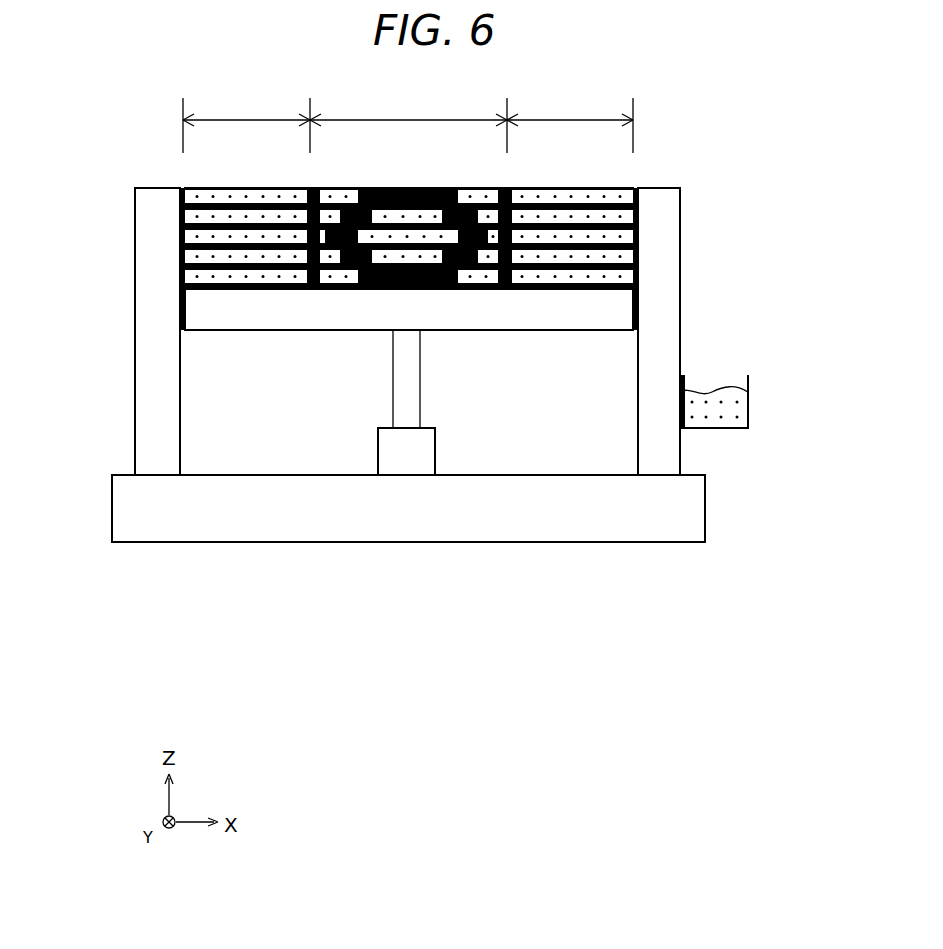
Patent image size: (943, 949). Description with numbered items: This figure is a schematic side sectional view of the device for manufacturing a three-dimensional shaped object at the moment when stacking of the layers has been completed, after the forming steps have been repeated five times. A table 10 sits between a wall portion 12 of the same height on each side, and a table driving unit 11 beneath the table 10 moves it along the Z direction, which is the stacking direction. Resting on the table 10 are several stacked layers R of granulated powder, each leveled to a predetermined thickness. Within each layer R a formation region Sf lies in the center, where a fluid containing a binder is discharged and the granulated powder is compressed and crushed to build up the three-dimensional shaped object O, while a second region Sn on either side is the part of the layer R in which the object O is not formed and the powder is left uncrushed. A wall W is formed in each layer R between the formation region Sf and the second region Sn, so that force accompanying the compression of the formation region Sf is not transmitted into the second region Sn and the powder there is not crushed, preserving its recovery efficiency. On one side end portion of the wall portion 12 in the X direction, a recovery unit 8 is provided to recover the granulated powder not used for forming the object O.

The recovery unit 8 is at (748, 393).
The table 10 is at (276, 322).
The table driving unit 11 is at (378, 446).
The wall portion 12 is at (136, 290).
The layer R is at (630, 186).
The wall W is at (311, 285).
The three-dimensional shaped object O is at (445, 289).
The second region Sn is at (408, 117).
The formation region Sf is at (408, 104).